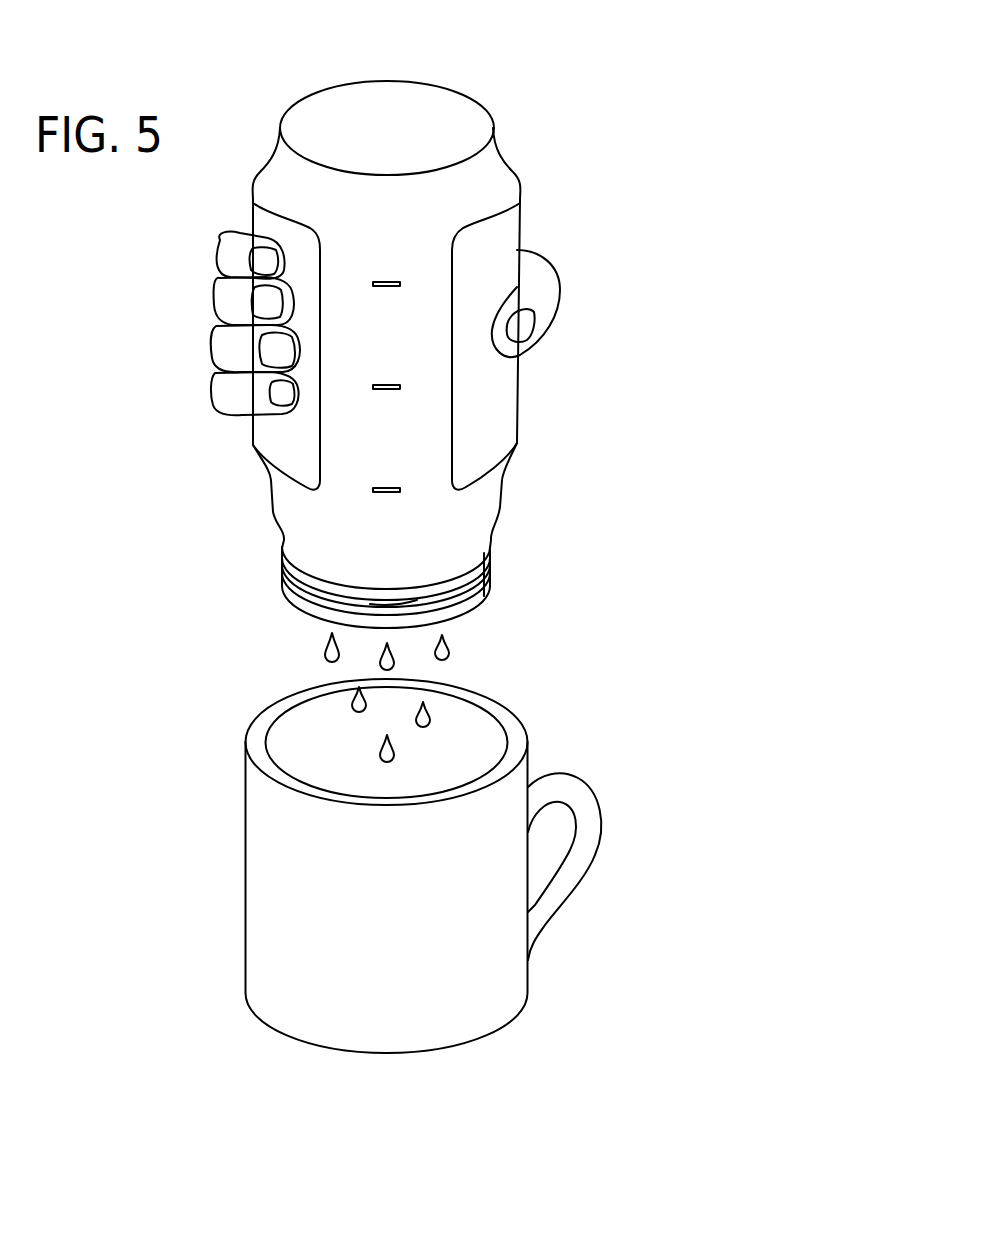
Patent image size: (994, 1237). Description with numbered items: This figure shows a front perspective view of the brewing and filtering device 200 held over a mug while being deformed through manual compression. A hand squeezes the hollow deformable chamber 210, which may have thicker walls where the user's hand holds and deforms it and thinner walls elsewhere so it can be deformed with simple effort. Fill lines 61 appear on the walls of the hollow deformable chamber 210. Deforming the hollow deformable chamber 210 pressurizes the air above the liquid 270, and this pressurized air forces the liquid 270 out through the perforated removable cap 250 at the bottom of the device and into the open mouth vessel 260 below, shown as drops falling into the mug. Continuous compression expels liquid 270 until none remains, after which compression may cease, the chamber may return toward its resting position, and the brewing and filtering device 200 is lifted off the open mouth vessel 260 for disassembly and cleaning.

The brewing and filtering device 200 is at (616, 94).
The hollow deformable chamber 210 is at (488, 188).
The fill lines 61 is at (407, 490).
The perforated removable cap 250 is at (483, 572).
The liquid 270 is at (325, 652).
The open mouth vessel 260 is at (528, 745).